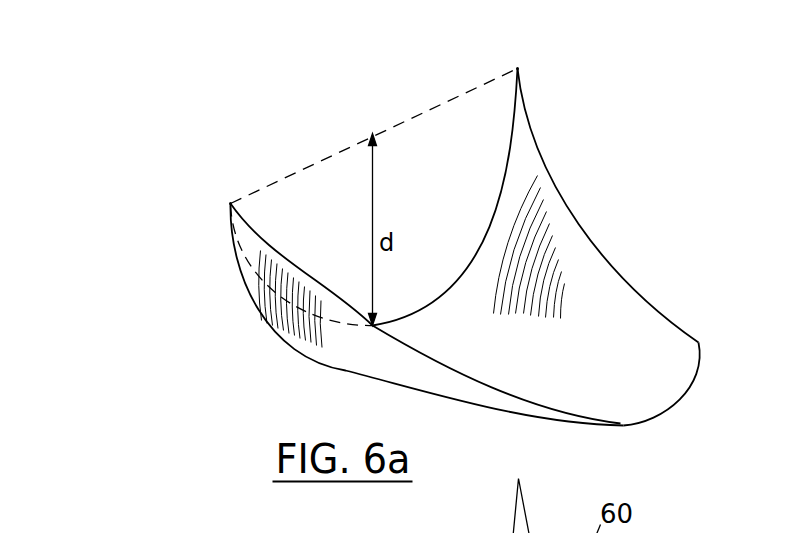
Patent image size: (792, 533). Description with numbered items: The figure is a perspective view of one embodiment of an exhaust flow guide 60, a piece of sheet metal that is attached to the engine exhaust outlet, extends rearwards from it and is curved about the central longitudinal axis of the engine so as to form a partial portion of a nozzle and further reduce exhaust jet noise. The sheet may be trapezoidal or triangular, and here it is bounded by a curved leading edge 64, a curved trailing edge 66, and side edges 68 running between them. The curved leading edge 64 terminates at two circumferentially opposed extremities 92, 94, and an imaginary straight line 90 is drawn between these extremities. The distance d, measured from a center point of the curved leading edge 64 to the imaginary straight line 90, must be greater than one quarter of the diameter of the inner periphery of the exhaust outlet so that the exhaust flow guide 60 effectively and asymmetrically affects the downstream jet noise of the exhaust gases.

The exhaust flow guide 60 is at (273, 363).
The curved leading edge 64 is at (500, 178).
The curved trailing edge 66 is at (690, 390).
The side edges 68 is at (580, 218).
The imaginary straight line 90 is at (292, 174).
The extremity of the curved leading edge 92 is at (230, 203).
The extremity of the curved leading edge 94 is at (517, 68).